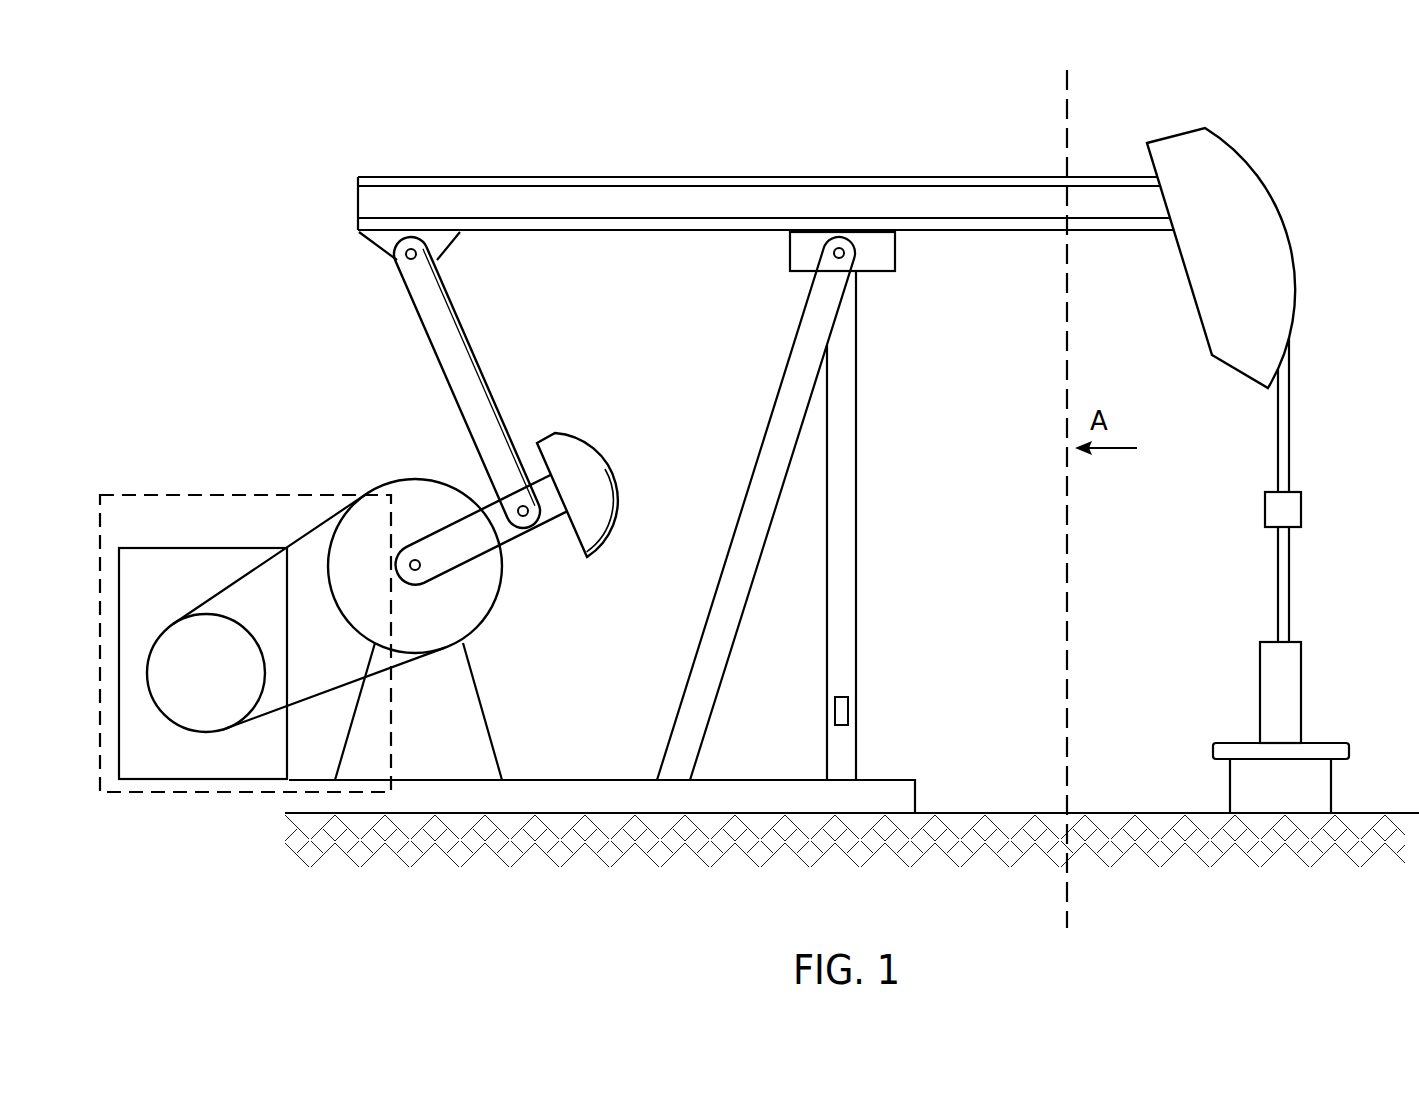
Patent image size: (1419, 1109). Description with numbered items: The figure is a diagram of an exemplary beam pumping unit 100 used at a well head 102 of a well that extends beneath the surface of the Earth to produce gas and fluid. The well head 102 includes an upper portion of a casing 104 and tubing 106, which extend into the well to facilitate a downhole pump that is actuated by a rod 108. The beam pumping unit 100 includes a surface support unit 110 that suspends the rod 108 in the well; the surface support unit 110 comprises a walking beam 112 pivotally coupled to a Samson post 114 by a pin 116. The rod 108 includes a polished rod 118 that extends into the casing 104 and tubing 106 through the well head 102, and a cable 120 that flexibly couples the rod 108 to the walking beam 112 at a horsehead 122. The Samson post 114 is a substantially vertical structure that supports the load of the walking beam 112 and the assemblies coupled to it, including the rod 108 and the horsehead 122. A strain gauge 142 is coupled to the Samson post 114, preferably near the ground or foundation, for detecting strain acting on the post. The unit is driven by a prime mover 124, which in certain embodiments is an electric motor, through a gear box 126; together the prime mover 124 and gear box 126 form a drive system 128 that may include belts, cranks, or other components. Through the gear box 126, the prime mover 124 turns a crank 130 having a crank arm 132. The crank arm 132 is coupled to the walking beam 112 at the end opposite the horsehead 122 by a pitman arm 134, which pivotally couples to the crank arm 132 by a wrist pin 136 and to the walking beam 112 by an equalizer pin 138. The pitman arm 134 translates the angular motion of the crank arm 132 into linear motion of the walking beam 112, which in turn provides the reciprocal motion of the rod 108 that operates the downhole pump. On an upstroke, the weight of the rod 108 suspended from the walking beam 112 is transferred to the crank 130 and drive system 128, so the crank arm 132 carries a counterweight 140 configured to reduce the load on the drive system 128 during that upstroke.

The beam pumping unit 100 is at (365, 140).
The well head 102 is at (1192, 748).
The casing 104 is at (1230, 790).
The tubing 106 is at (1260, 688).
The rod 108 is at (1227, 518).
The surface support unit 110 is at (898, 290).
The walking beam 112 is at (1013, 177).
The Samson post 114 is at (857, 540).
The pin 116 is at (828, 250).
The polished rod 118 is at (1290, 568).
The cable 120 is at (1290, 445).
The horsehead 122 is at (1283, 220).
The prime mover 124 is at (207, 732).
The gear box 126 is at (155, 548).
The drive system 128 is at (253, 495).
The crank 130 is at (418, 480).
The crank arm 132 is at (473, 563).
The pitman arm 134 is at (475, 358).
The wrist pin 136 is at (523, 520).
The equalizer pin 138 is at (398, 262).
The counterweight 140 is at (608, 462).
The strain gauge 142 is at (848, 710).